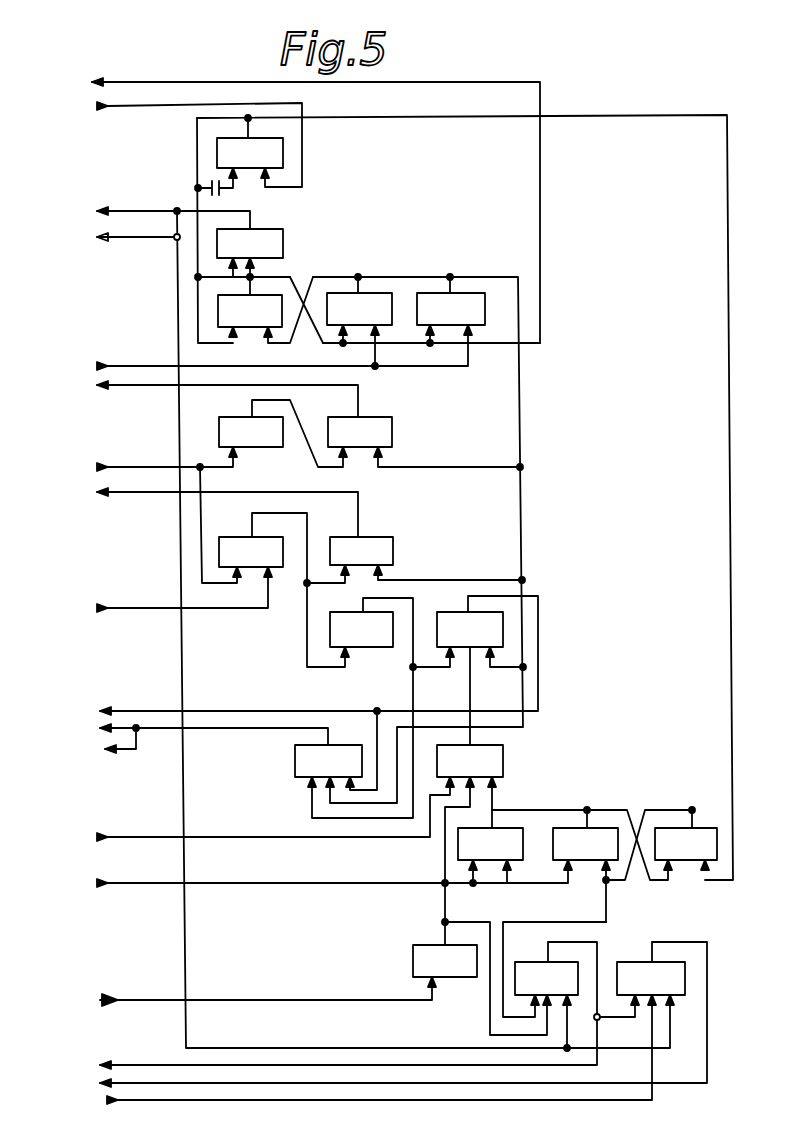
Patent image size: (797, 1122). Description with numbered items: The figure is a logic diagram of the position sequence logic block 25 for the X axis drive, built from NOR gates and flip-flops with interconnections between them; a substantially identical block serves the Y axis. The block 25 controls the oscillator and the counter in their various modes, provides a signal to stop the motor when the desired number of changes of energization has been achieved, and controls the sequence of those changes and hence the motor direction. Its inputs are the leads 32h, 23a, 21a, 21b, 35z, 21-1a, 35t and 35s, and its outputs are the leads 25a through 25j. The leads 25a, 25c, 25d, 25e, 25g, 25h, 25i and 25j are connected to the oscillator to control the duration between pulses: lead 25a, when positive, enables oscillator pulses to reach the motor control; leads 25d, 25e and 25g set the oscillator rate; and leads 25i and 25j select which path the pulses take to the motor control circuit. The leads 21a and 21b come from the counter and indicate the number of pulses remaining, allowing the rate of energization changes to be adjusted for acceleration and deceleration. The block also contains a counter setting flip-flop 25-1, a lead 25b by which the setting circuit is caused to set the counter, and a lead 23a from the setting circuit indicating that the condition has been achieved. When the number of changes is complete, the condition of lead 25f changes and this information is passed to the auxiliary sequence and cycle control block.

The position sequence logic block 25 is at (646, 91).
The counter setting flip-flop 25-1 is at (303, 283).
The output lead 25a is at (287, 205).
The input lead 32h is at (167, 144).
The lead 25b is at (139, 212).
The output lead 25c is at (104, 238).
The lead 23a is at (252, 350).
The output lead 25d is at (195, 395).
The input lead 21a is at (138, 515).
The output lead 25e is at (195, 509).
The input lead 21b is at (154, 595).
The lead 25f is at (287, 693).
The output lead 25g is at (182, 731).
The output lead 25h is at (86, 746).
The input lead 35z is at (97, 837).
The input lead 21-1a is at (294, 879).
The input lead 35t is at (233, 995).
The output lead 25i is at (339, 1012).
The output lead 25j is at (373, 1022).
The input lead 35s is at (106, 1101).